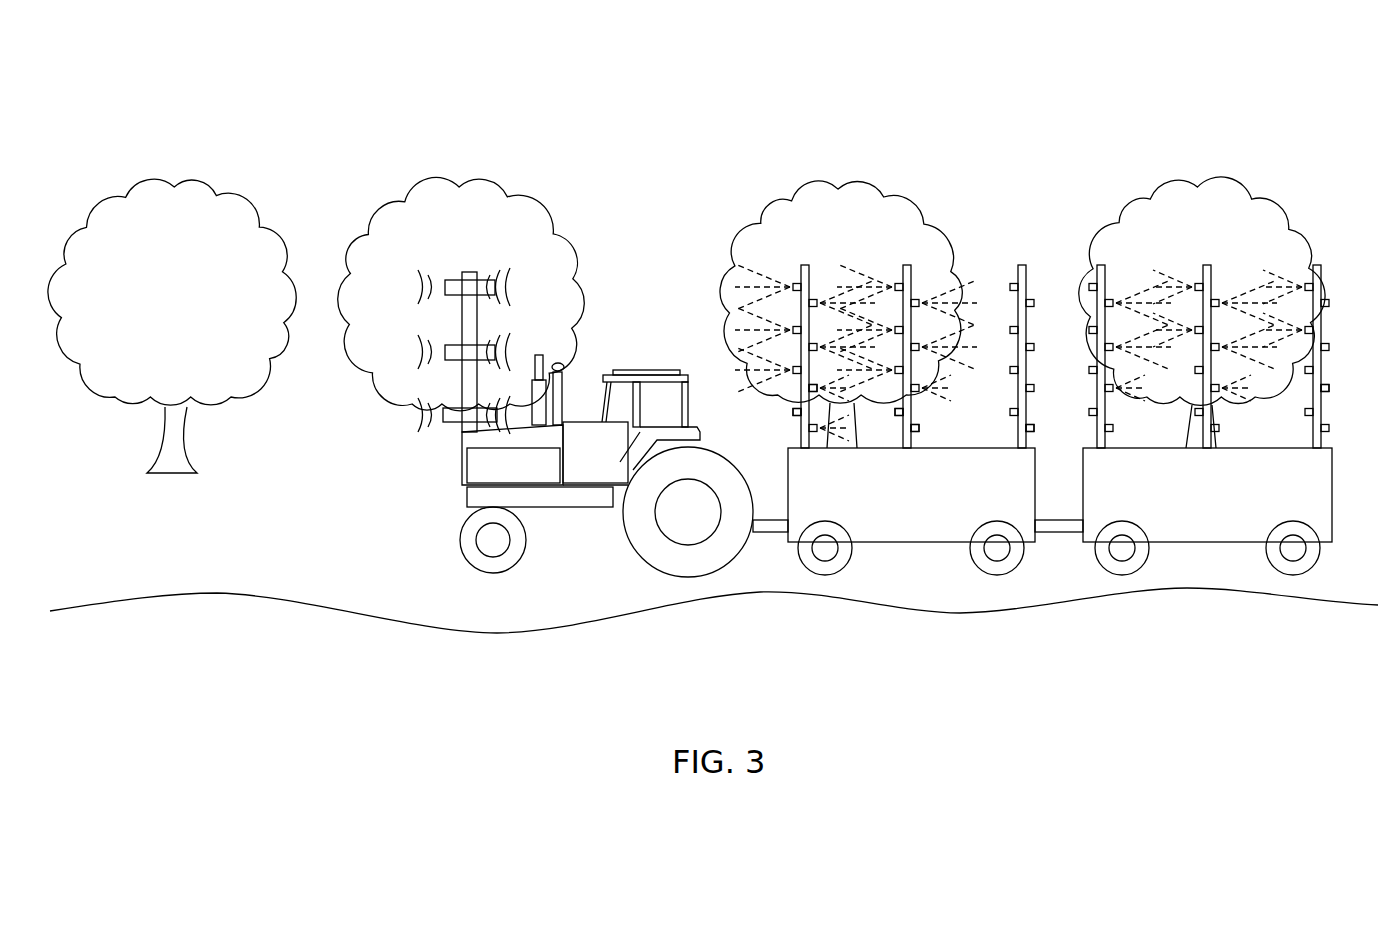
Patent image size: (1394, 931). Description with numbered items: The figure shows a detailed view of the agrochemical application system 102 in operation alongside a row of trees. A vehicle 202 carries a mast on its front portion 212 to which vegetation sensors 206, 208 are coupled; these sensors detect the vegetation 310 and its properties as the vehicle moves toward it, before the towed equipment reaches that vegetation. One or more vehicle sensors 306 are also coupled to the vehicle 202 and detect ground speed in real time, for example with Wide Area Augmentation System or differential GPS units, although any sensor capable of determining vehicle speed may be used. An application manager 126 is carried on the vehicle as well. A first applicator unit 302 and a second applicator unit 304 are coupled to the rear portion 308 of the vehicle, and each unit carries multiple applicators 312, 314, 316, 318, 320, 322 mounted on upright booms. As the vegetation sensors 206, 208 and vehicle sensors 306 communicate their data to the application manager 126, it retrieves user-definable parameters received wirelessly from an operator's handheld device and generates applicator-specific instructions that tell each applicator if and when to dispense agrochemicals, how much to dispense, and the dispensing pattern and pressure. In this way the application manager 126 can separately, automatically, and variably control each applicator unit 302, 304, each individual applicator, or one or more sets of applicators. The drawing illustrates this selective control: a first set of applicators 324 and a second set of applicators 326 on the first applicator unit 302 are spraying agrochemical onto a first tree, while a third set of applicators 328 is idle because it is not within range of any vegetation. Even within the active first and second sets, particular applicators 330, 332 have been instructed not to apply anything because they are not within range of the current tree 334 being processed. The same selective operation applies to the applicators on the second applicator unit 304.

The agrochemical application system 102 is at (713, 125).
The application manager 126 is at (587, 484).
The vehicle 202 is at (460, 420).
The vegetation sensor 206 is at (462, 280).
The vegetation sensor 208 is at (495, 345).
The front portion 212 is at (466, 494).
The first applicator unit 302 is at (910, 523).
The second applicator unit 304 is at (1207, 523).
The vehicle sensor 306 is at (547, 483).
The rear portion 308 is at (768, 535).
The vegetation 310 is at (455, 175).
The applicator 312 is at (802, 266).
The applicator 314 is at (912, 388).
The applicator 316 is at (1034, 303).
The applicator 318 is at (1160, 175).
The applicator 320 is at (1206, 300).
The applicator 322 is at (1329, 388).
The first set of applicators 324 is at (800, 388).
The second set of applicators 326 is at (912, 412).
The third set of applicators 328 is at (1034, 428).
The applicator 330 is at (793, 412).
The applicator 332 is at (919, 428).
The current tree 334 is at (838, 177).